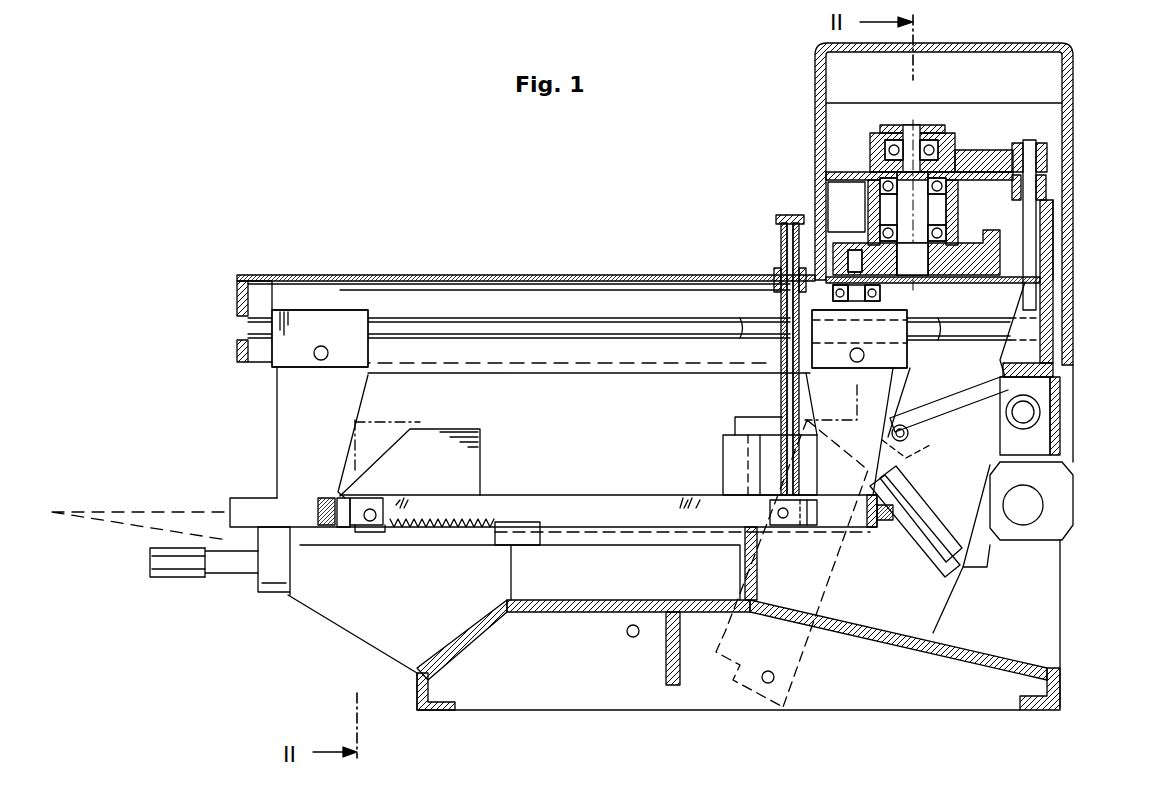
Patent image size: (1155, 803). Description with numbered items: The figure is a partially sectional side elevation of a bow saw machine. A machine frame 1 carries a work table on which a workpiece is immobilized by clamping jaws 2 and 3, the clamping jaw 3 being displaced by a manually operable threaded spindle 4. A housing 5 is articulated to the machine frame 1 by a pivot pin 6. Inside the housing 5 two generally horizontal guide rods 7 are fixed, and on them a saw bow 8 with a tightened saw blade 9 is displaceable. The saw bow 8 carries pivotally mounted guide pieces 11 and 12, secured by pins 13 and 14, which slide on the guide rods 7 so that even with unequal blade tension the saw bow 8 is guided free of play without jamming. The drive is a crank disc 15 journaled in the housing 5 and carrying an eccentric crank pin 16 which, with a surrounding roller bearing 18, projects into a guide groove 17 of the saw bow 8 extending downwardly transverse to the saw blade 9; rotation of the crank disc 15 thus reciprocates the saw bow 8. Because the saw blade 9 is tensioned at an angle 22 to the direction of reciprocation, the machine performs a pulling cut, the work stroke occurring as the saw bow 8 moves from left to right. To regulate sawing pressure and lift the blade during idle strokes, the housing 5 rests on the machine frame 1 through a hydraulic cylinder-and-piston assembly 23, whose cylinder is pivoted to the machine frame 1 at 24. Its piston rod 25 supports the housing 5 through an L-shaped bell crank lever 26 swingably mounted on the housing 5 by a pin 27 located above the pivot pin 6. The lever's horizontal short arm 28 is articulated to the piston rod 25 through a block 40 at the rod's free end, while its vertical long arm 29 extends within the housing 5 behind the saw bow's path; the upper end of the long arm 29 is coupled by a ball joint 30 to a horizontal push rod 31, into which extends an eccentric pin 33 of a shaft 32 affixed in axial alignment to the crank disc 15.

The machine frame 1 is at (483, 672).
The clamping jaw 2 is at (724, 468).
The clamping jaw 3 is at (468, 462).
The threaded spindle 4 is at (222, 565).
The housing 5 is at (385, 276).
The pivot pin 6 is at (1025, 520).
The guide rods 7 is at (487, 318).
The saw bow 8 is at (570, 348).
The saw blade 9 is at (425, 515).
The guide piece 11 is at (905, 350).
The guide piece 12 is at (278, 370).
The pin 13 is at (860, 362).
The pin 14 is at (320, 360).
The crank disc 15 is at (972, 247).
The eccentric crank pin 16 is at (856, 250).
The guide groove 17 is at (774, 290).
The roller bearing 18 is at (882, 293).
The angle 22 is at (130, 520).
The hydraulic cylinder-and-piston assembly 23 is at (830, 648).
The pivot point 24 is at (768, 684).
The piston rod 25 is at (906, 468).
The bell crank lever 26 is at (1058, 370).
The pin 27 is at (1030, 412).
The short arm 28 is at (1015, 480).
The long arm 29 is at (1053, 196).
The ball joint 30 is at (1050, 155).
The push rod 31 is at (983, 150).
The shaft 32 is at (872, 195).
The eccentric pin 33 is at (910, 140).
The block 40 is at (918, 430).